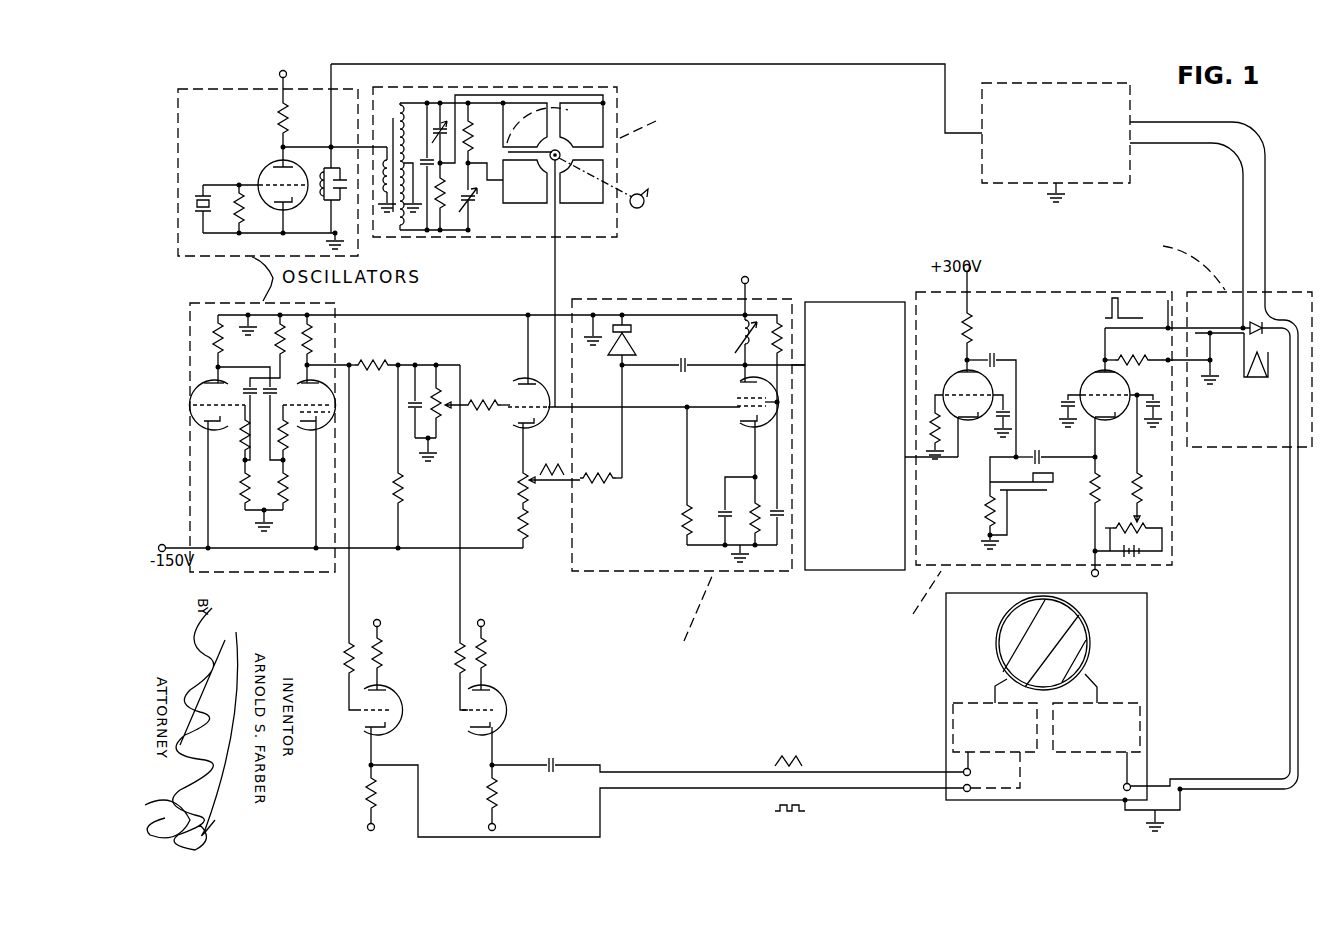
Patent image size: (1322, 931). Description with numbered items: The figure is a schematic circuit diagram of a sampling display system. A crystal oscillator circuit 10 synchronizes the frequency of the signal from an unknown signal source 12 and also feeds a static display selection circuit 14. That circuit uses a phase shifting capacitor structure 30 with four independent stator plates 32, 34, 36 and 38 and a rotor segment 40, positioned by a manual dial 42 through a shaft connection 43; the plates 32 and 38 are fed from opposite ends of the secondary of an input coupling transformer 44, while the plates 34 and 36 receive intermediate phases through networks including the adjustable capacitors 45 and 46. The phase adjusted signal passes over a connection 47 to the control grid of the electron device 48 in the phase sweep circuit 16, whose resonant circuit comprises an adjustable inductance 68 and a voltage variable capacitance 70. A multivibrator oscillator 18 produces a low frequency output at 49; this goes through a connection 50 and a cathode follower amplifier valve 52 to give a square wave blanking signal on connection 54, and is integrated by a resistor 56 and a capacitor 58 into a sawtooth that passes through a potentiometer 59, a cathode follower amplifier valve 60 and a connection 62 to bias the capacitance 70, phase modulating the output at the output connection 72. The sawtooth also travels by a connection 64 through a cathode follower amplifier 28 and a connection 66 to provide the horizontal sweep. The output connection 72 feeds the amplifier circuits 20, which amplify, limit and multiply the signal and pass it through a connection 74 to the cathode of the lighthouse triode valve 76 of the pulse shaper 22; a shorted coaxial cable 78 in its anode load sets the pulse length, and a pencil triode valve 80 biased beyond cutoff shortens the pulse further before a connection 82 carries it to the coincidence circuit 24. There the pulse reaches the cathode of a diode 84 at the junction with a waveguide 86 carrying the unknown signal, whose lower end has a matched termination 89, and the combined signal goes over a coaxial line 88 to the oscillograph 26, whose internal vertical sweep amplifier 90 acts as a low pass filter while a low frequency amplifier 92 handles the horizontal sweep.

The crystal oscillator circuit 10 is at (178, 152).
The unknown signal source 12 is at (982, 168).
The static display selection circuit 14 is at (618, 167).
The phase sweep circuit 16 is at (657, 298).
The multivibrator oscillator 18 is at (189, 374).
The amplifier circuits 20 is at (871, 302).
The pulse shaper 22 is at (1138, 292).
The coincidence circuit 24 is at (1287, 291).
The oscillograph 26 is at (1133, 627).
The cathode follower amplifier 28 is at (500, 699).
The phase shifting capacitor structure 30 is at (578, 103).
The stator plate 32 is at (524, 103).
The stator plate 34 is at (598, 115).
The stator plate 36 is at (532, 197).
The stator plate 38 is at (575, 197).
The rotor segment 40 is at (508, 152).
The manual dial 42 is at (646, 209).
The shaft connection 43 is at (622, 191).
The input coupling transformer 44 is at (390, 145).
The adjustable capacitor 45 is at (440, 108).
The adjustable capacitor 46 is at (478, 206).
The connection 47 is at (555, 262).
The electron device 48 is at (730, 469).
The multivibrator output 49 is at (319, 364).
The connection 50 is at (352, 589).
The cathode follower amplifier valve 52 is at (362, 720).
The connection 54 is at (903, 788).
The resistor 56 is at (368, 360).
The capacitor 58 is at (408, 403).
The potentiometer 59 is at (444, 416).
The cathode follower amplifier valve 60 is at (513, 389).
The connection 62 is at (618, 486).
The connection 64 is at (462, 589).
The connection 66 is at (899, 771).
The adjustable inductance 68 is at (737, 341).
The voltage variable capacitance 70 is at (636, 340).
The output connection 72 is at (797, 363).
The connection 74 is at (912, 459).
The valve 76 is at (960, 380).
The coaxial cable 78 is at (1022, 492).
The valve 80 is at (1092, 378).
The connection 82 is at (1176, 298).
The diode 84 is at (1256, 322).
The waveguide 86 is at (1244, 205).
The coaxial line 88 is at (1290, 427).
The matched termination 89 is at (1234, 367).
The internal vertical sweep amplifier 90 is at (1140, 698).
The low frequency amplifier 92 is at (953, 698).